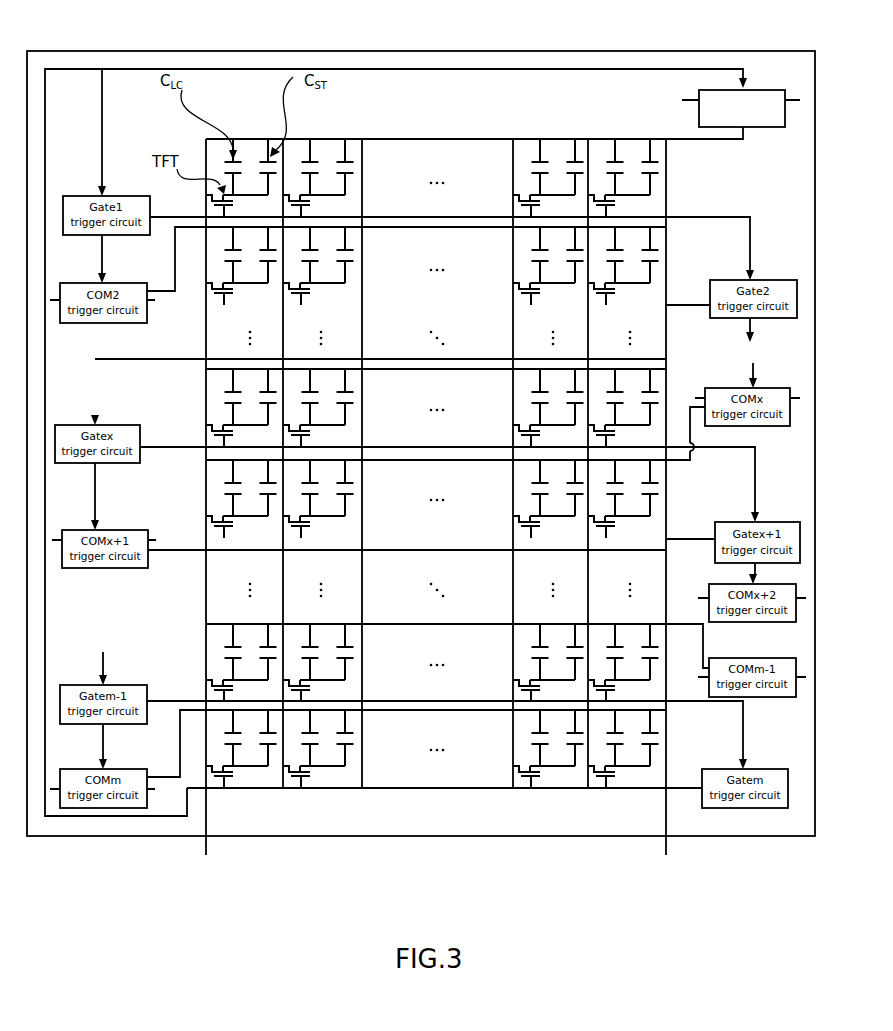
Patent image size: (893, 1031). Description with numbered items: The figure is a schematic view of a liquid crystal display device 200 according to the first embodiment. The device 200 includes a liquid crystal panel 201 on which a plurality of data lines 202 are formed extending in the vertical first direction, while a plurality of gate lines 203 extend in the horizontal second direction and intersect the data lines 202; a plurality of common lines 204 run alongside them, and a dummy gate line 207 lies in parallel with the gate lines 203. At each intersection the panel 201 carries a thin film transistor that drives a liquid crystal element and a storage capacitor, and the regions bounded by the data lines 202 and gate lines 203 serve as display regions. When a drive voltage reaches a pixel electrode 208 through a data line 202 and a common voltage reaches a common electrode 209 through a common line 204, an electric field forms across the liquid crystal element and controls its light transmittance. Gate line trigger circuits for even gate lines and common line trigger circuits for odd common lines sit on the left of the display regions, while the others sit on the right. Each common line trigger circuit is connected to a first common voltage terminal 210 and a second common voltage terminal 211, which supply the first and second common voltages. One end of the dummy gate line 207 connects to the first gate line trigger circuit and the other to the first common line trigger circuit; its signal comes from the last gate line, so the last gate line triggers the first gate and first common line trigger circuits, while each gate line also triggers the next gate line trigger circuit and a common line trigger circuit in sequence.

The liquid crystal display device 200 is at (421, 459).
The liquid crystal panel 201 is at (268, 836).
The data lines 202 is at (509, 752).
The gate lines 203 is at (335, 790).
The common lines 204 is at (427, 700).
The dummy gate line 207 is at (427, 69).
The pixel electrode 208 is at (235, 207).
The common electrode 209 is at (241, 169).
The first common voltage terminal 210 is at (734, 70).
The second common voltage terminal 211 is at (799, 100).